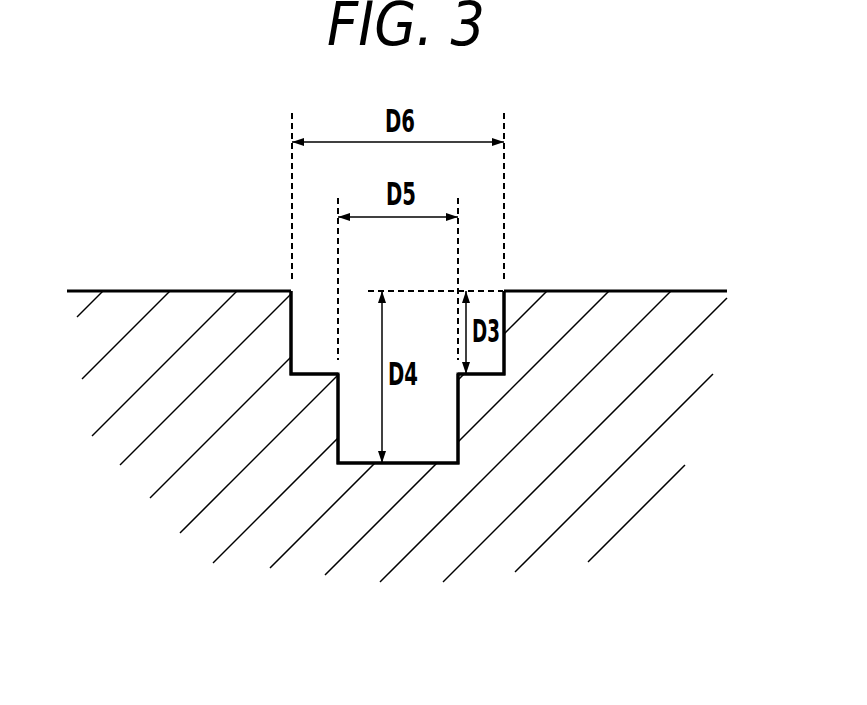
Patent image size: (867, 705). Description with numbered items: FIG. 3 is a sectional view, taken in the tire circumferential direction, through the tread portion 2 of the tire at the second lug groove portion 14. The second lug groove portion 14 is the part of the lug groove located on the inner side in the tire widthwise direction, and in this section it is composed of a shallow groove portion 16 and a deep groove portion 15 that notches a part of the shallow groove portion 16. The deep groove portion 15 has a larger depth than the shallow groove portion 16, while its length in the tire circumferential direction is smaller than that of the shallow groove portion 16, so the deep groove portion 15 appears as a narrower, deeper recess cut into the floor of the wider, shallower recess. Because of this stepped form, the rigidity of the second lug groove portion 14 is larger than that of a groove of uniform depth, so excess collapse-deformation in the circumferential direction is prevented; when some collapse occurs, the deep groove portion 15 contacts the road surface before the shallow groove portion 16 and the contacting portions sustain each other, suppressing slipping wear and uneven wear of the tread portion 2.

The tread portion 2 is at (643, 276).
The second lug groove portion 14 is at (248, 543).
The deep groove portion 15 is at (336, 425).
The shallow groove portion 16 is at (290, 339).